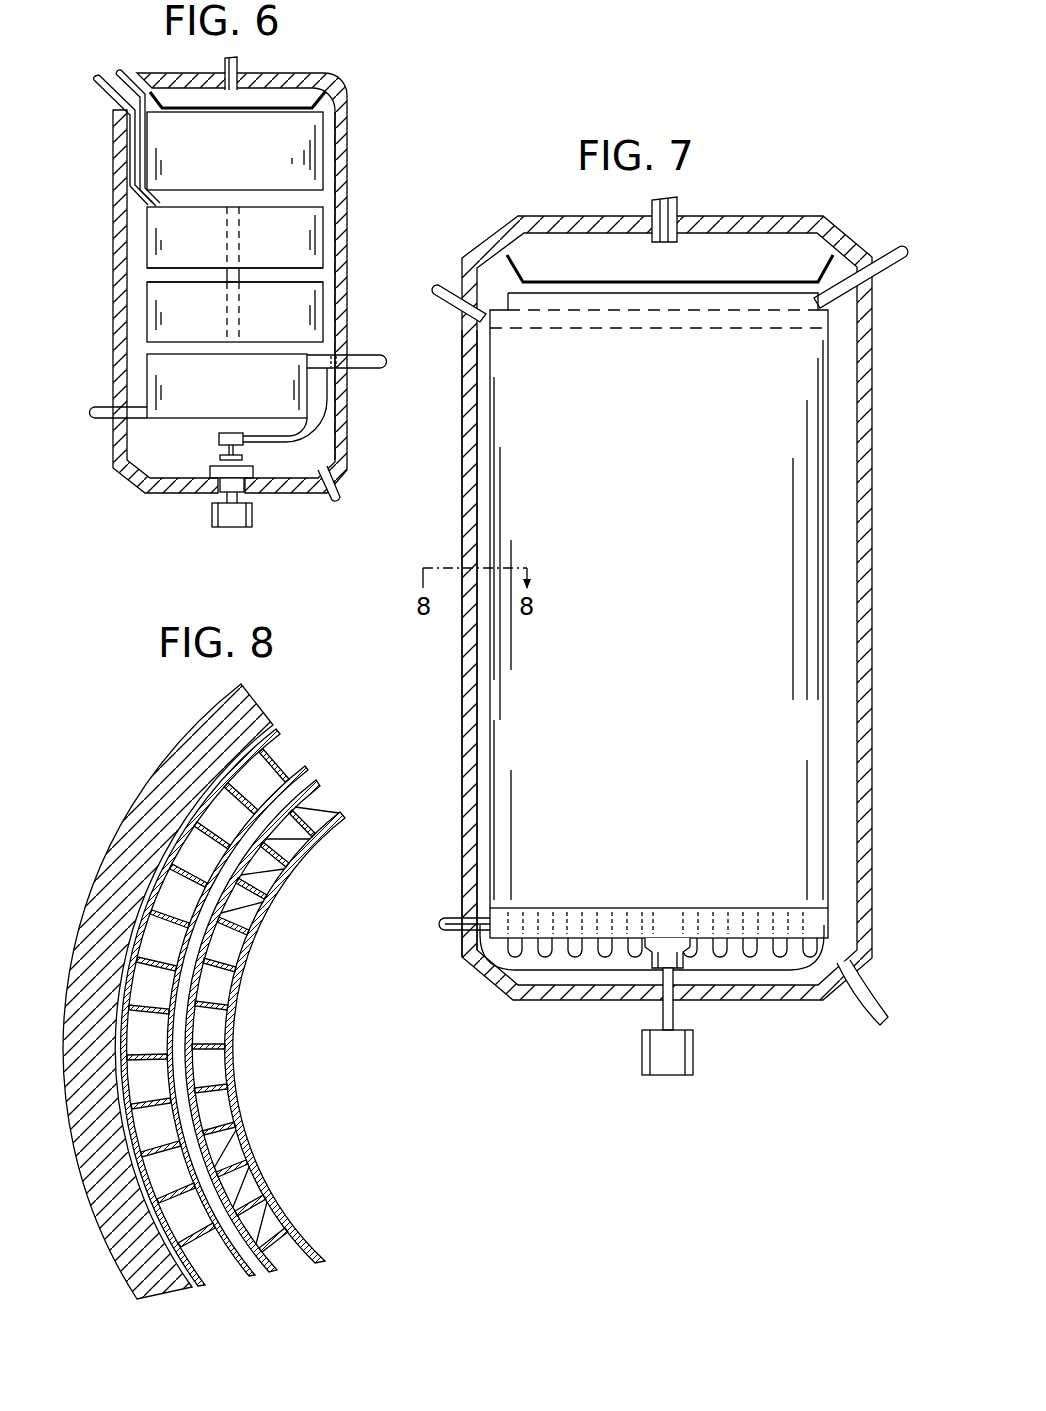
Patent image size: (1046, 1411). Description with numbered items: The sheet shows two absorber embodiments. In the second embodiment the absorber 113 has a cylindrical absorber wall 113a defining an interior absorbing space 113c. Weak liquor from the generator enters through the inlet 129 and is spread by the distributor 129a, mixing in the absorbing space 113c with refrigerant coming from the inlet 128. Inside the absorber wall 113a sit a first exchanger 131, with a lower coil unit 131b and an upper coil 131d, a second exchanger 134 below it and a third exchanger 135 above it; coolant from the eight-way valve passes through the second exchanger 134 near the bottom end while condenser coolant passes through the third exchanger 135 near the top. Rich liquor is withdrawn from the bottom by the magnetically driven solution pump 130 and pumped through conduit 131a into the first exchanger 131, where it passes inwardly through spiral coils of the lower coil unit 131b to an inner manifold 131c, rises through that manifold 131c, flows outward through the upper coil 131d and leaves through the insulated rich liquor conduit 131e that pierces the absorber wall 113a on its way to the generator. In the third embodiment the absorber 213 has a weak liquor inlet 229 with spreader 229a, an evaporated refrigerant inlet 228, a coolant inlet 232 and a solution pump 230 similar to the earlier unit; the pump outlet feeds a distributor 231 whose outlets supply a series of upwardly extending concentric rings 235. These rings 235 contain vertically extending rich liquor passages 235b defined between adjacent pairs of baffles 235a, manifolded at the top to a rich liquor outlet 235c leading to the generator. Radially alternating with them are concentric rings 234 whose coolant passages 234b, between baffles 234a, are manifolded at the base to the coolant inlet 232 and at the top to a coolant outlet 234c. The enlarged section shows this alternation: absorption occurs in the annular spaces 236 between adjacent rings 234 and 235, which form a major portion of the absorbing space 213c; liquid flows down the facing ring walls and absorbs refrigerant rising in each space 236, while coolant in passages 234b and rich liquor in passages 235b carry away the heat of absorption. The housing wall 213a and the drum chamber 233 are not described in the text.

In FIG. 6, the absorber 113 is at (345, 81).
In FIG. 6, the absorber wall 113a is at (342, 128).
In FIG. 6, the absorbing space 113c is at (327, 152).
In FIG. 6, the inlet 129 is at (237, 62).
In FIG. 6, the distributor 129a is at (190, 100).
In FIG. 6, the third exchanger 135 is at (235, 151).
In FIG. 6, the first exchanger 131 is at (140, 278).
In FIG. 6, the conduit 131a is at (328, 410).
In FIG. 6, the lower coil unit 131b is at (157, 320).
In FIG. 6, the inner manifold 131c is at (238, 238).
In FIG. 6, the upper coil 131d is at (163, 235).
In FIG. 6, the rich liquor conduit 131e is at (140, 202).
In FIG. 6, the second exchanger 134 is at (163, 375).
In FIG. 6, the solution pump 130 is at (218, 438).
In FIG. 6, the inlet 128 is at (341, 489).
In FIG. 7, the absorber 213 is at (483, 238).
In FIG. 7, the housing wall 213a is at (468, 445).
In FIG. 8, the housing wall 213a is at (213, 730).
In FIG. 7, the absorbing space 213c is at (490, 626).
In FIG. 7, the weak liquor inlet 229 is at (660, 208).
In FIG. 7, the spreader 229a is at (580, 280).
In FIG. 7, the rich liquor outlet 235c is at (880, 248).
In FIG. 7, the coolant outlet 234c is at (450, 295).
In FIG. 7, the coolant inlet 232 is at (453, 922).
In FIG. 7, the drum chamber 233 is at (659, 908).
In FIG. 7, the distributor 231 is at (573, 966).
In FIG. 7, the solution pump 230 is at (662, 964).
In FIG. 7, the evaporated refrigerant inlet 228 is at (843, 983).
In FIG. 8, the concentric rings 235 is at (208, 813).
In FIG. 8, the baffles 235a is at (160, 907).
In FIG. 8, the rich liquor passages 235b is at (267, 780).
In FIG. 8, the annular spaces 236 is at (263, 823).
In FIG. 8, the concentric rings 234 is at (249, 982).
In FIG. 8, the baffles 234a is at (223, 1077).
In FIG. 8, the coolant passages 234b is at (230, 953).